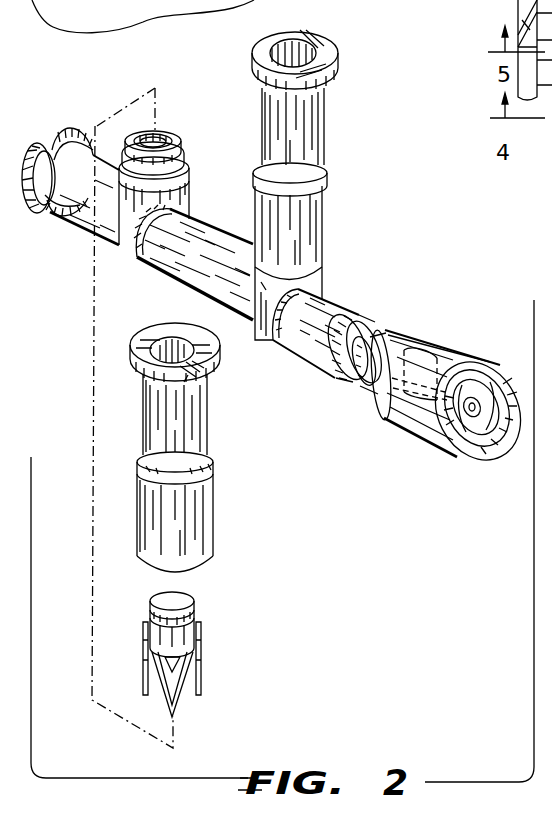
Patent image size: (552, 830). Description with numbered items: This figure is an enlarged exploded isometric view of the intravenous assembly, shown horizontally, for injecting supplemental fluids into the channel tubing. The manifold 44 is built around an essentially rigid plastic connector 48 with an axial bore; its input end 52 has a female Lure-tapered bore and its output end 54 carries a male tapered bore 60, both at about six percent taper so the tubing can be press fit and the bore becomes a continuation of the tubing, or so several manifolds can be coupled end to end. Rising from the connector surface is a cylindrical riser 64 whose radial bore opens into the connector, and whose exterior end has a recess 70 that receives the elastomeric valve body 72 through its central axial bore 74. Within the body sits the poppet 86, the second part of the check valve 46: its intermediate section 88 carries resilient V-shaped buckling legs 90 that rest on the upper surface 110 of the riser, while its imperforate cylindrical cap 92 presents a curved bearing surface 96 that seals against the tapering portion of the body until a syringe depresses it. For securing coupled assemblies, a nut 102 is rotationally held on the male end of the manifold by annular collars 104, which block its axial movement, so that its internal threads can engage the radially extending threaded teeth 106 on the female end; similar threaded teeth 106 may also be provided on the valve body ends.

The manifold 44 is at (343, 300).
The check valve 46 is at (327, 167).
The connector 48 is at (202, 216).
The input end 52 is at (36, 147).
The output end 54 is at (477, 410).
The male tapered bore 60 is at (476, 349).
The cylindrical riser 64 is at (190, 190).
The recess 70 is at (124, 150).
The valve body 72 is at (142, 425).
The central axial bore 74 is at (330, 32).
The poppet 86 is at (198, 647).
The intermediate section 88 is at (200, 652).
The buckling legs 90 is at (186, 706).
The cap 92 is at (146, 625).
The bearing surface 96 is at (190, 602).
The nut 102 is at (463, 336).
The annular collar 104 is at (394, 333).
The threaded teeth 106 is at (96, 133).
The upper surface 110 is at (160, 599).